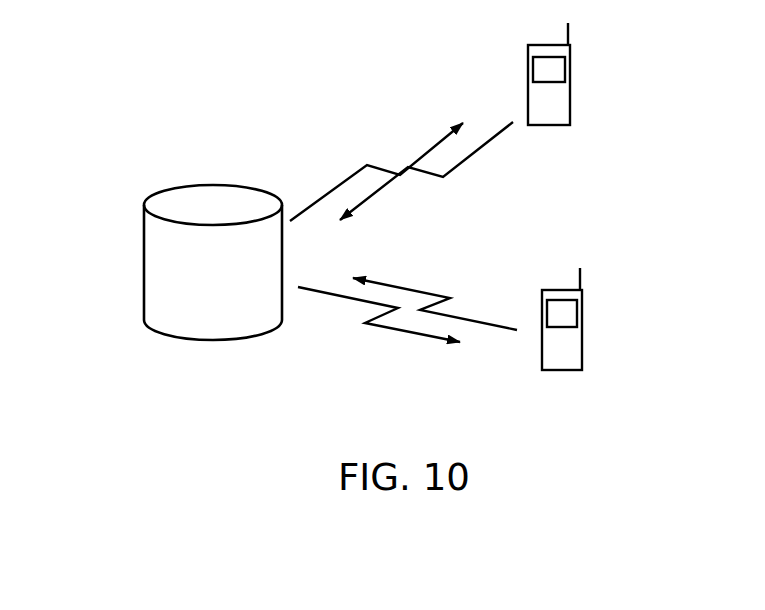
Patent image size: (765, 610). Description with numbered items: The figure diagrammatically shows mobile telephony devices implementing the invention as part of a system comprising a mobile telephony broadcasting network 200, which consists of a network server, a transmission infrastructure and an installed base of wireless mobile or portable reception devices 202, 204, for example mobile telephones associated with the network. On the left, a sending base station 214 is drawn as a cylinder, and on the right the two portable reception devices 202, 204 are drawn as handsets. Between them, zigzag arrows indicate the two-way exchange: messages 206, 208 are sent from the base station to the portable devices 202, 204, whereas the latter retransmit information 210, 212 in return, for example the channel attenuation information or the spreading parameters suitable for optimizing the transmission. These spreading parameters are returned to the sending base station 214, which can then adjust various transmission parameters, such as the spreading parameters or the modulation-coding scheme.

The mobile telephony broadcasting network 200 is at (203, 127).
The portable reception device 202 is at (572, 98).
The portable reception device 204 is at (583, 342).
The message 206 is at (413, 142).
The message 208 is at (390, 330).
The retransmitted information 210 is at (453, 150).
The retransmitted information 212 is at (425, 290).
The sending base station 214 is at (144, 252).